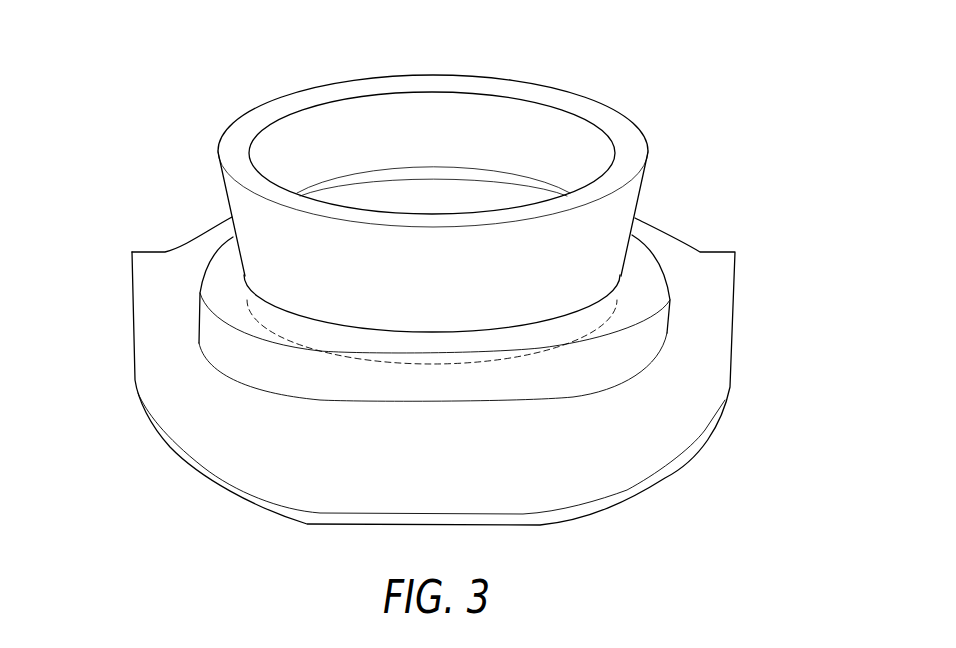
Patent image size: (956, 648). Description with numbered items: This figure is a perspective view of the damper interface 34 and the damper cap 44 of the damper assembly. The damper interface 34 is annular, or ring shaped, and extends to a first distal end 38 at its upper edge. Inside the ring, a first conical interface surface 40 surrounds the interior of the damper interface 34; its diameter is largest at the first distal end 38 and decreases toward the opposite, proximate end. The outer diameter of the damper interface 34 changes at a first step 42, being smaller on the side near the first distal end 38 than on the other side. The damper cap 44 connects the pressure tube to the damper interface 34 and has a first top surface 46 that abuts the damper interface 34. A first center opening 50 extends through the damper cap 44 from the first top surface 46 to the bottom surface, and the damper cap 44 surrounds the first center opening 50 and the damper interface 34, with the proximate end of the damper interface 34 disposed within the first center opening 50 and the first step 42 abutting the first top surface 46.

The damper interface 34 is at (243, 202).
The first distal end 38 is at (603, 115).
The first conical interface surface 40 is at (515, 137).
The first step 42 is at (610, 312).
The damper cap 44 is at (617, 475).
The first top surface 46 is at (683, 410).
The first center opening 50 is at (300, 327).